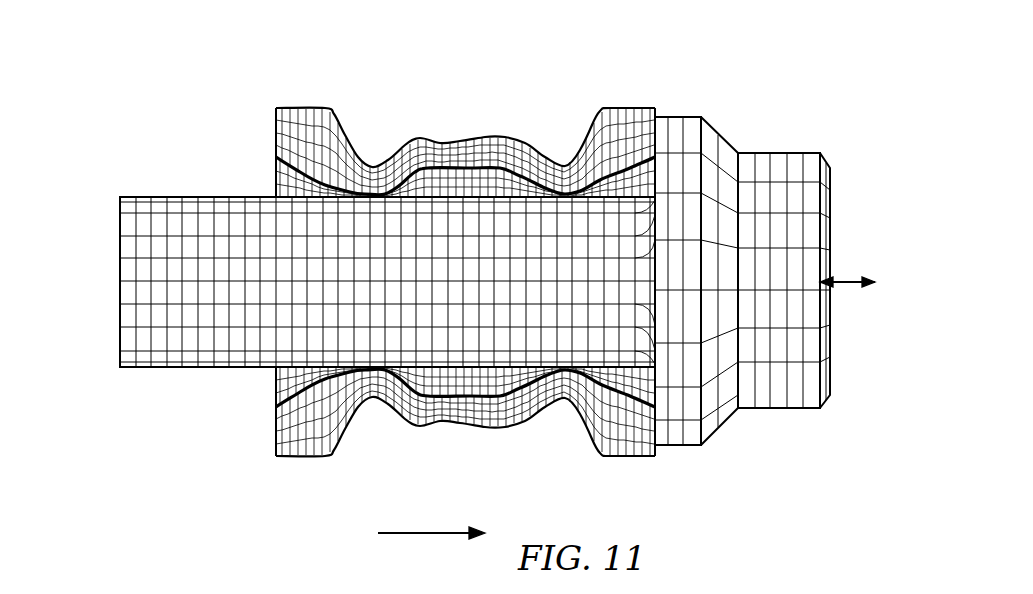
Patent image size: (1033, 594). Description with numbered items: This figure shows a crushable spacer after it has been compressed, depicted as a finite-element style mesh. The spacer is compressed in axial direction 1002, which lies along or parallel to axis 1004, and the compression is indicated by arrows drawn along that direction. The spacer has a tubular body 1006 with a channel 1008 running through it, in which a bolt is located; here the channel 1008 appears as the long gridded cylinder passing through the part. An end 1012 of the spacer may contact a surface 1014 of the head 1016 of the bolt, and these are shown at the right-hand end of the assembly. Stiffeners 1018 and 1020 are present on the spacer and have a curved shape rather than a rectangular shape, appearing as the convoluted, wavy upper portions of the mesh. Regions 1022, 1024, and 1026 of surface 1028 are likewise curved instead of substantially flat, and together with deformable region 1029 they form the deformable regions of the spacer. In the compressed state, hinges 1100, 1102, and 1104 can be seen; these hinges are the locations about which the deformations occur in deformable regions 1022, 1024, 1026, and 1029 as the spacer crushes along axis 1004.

The axial direction 1002 is at (423, 537).
The axis 1004 is at (862, 282).
The tubular body 1006 is at (676, 432).
The channel 1008 is at (120, 345).
The end 1012 is at (760, 410).
The surface 1014 is at (465, 433).
The head 1016 is at (828, 400).
The stiffener 1018 is at (413, 136).
The stiffener 1020 is at (513, 137).
The region 1022 is at (370, 400).
The region 1024 is at (435, 415).
The region 1026 is at (492, 418).
The surface 1028 is at (630, 115).
The deformable region 1029 is at (555, 400).
The hinge 1100 is at (469, 125).
The hinge 1102 is at (459, 147).
The hinge 1104 is at (533, 163).